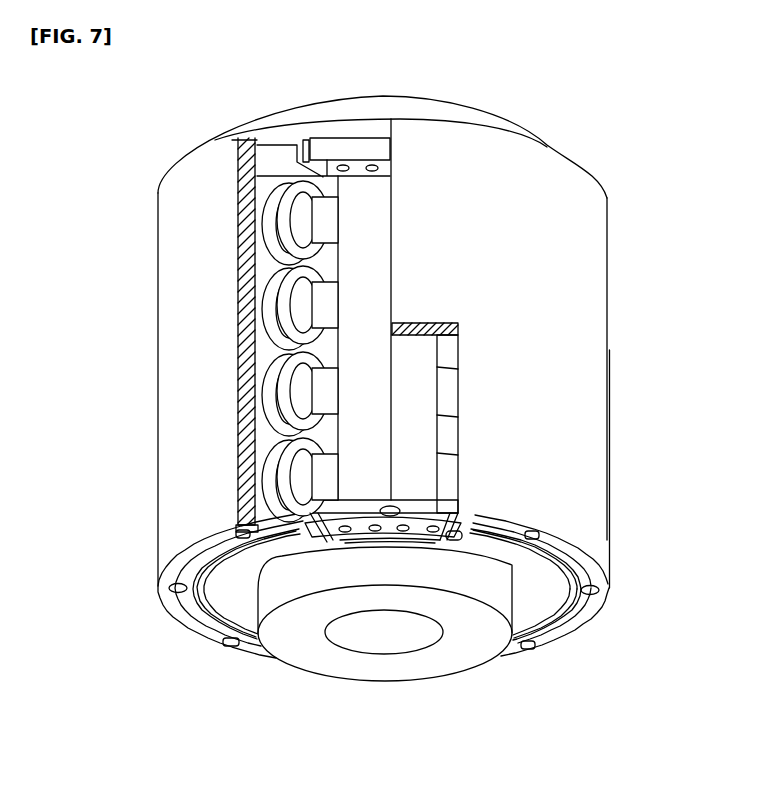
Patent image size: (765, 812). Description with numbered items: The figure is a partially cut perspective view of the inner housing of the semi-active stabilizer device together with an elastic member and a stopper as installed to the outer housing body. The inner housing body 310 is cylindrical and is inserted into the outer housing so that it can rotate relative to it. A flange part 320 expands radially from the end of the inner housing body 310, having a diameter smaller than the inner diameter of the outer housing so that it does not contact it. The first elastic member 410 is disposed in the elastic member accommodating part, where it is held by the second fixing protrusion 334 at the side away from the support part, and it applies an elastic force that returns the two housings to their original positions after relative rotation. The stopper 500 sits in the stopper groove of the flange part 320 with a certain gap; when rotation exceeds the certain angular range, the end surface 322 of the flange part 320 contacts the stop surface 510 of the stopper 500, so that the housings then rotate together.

The inner housing body 310 is at (580, 233).
The flange part 320 is at (543, 595).
The end surface 322 is at (455, 537).
The second fixing protrusion 334 is at (327, 303).
The first elastic member 410 is at (273, 402).
The stopper 500 is at (361, 531).
The stop surface 510 is at (447, 540).